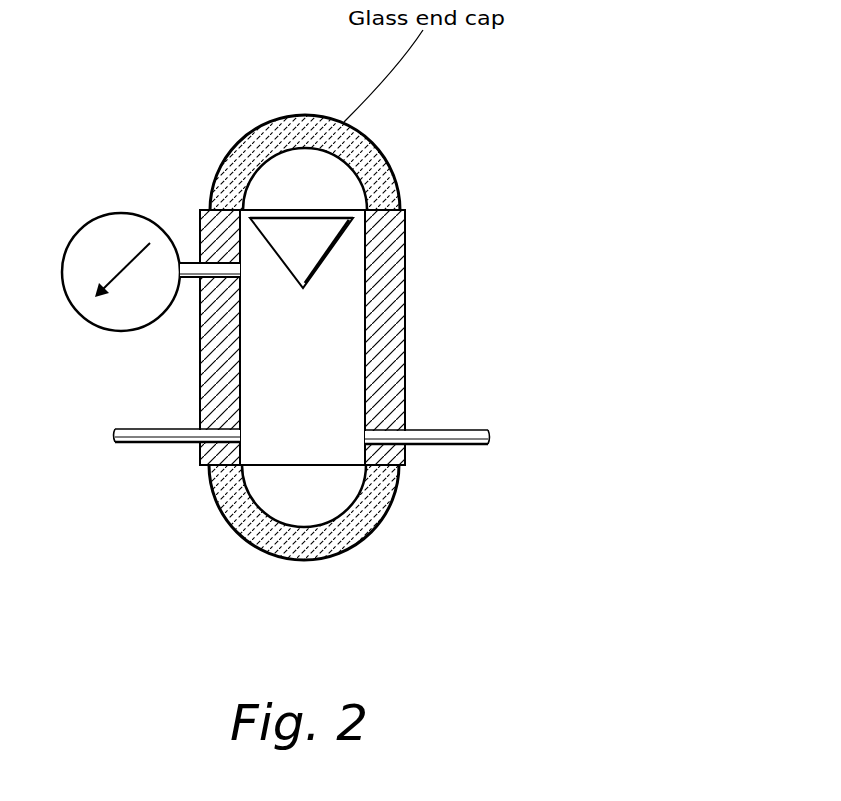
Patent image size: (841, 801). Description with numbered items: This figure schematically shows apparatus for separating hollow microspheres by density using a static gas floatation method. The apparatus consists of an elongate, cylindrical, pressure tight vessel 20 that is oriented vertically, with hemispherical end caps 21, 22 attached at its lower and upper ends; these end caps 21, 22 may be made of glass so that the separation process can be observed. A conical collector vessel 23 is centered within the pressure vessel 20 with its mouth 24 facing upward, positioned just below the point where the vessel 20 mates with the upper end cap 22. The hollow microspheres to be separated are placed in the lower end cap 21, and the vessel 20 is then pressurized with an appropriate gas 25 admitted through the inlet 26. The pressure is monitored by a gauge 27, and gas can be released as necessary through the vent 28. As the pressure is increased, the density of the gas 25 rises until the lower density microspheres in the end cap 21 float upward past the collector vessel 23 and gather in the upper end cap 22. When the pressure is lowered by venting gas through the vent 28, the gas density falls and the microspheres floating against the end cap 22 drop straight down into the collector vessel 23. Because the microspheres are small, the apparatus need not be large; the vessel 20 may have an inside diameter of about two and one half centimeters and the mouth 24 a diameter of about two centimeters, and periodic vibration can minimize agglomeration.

The pressure tight vessel 20 is at (387, 317).
The end cap 21 is at (318, 540).
The end cap 22 is at (263, 135).
The conical collector vessel 23 is at (317, 250).
The mouth 24 is at (292, 216).
The gas 25 is at (318, 389).
The inlet 26 is at (185, 435).
The gauge 27 is at (103, 238).
The vent 28 is at (433, 433).